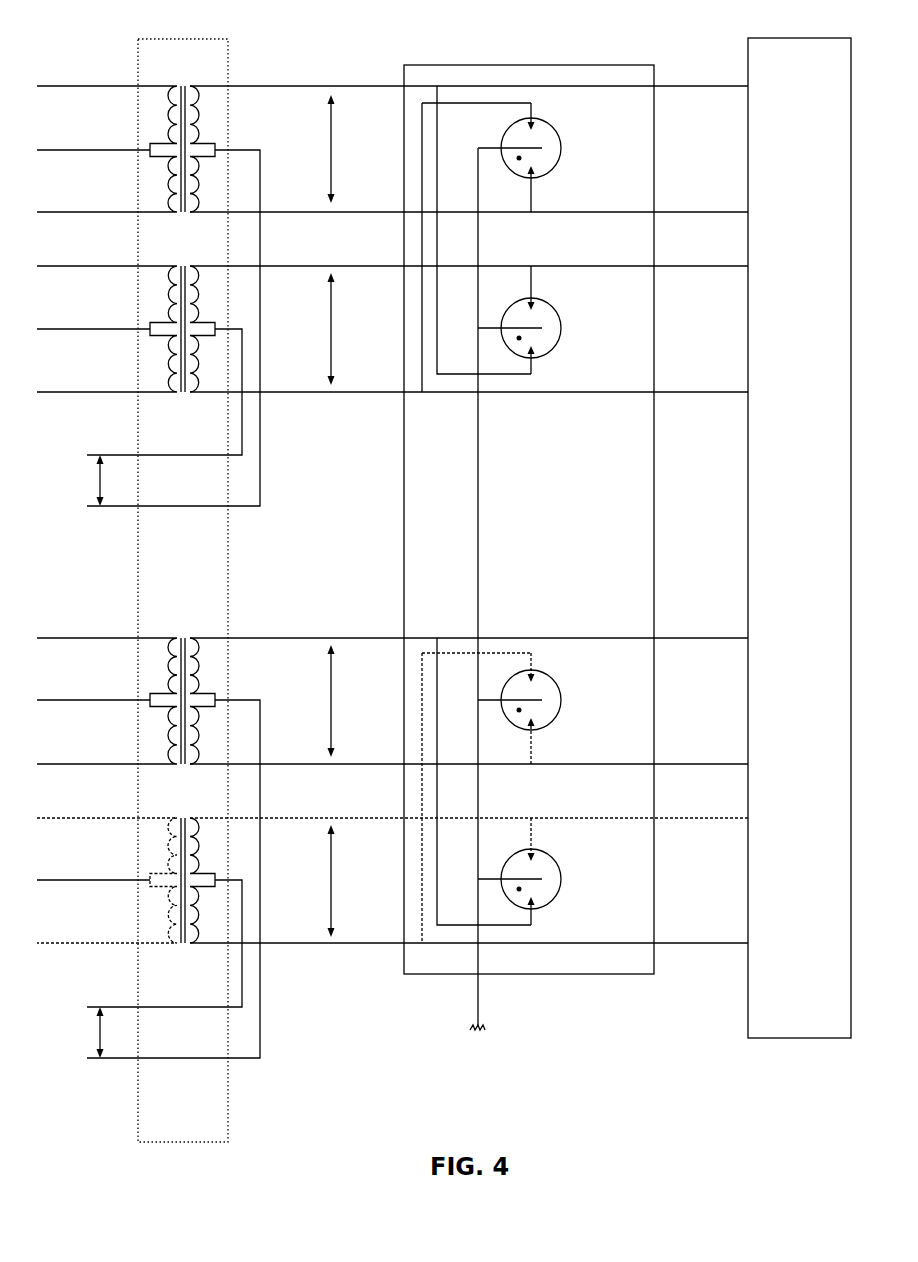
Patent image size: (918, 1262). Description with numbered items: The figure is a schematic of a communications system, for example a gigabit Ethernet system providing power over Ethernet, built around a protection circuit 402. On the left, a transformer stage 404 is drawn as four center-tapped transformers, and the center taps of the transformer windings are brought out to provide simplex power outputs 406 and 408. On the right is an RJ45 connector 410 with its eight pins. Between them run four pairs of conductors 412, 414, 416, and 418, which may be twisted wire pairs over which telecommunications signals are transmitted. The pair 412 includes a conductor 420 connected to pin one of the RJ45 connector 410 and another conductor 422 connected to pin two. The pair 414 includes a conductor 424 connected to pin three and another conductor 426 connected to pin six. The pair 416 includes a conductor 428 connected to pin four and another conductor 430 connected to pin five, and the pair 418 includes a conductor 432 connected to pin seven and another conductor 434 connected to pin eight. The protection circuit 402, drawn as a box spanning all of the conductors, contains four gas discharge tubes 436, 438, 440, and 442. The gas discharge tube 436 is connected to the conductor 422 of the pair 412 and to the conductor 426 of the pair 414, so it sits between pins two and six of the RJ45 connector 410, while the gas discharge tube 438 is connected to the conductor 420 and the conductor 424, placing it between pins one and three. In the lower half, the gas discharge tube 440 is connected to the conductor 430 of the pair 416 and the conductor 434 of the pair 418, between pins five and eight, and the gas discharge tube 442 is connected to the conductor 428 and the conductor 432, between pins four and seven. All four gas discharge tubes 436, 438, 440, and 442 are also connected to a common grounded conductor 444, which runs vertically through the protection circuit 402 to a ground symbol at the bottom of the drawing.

The protection circuit 402 is at (588, 65).
The transformer stage 404 is at (228, 50).
The simplex power output 406 is at (63, 512).
The simplex power output 408 is at (63, 1075).
The RJ45 connector 410 is at (800, 38).
The pair of conductors 412 is at (331, 155).
The pair of conductors 414 is at (331, 335).
The pair of conductors 416 is at (331, 700).
The pair of conductors 418 is at (331, 880).
The conductor 420 is at (665, 86).
The conductor 422 is at (665, 212).
The conductor 424 is at (665, 266).
The conductor 426 is at (665, 392).
The conductor 428 is at (665, 638).
The conductor 430 is at (665, 764).
The conductor 432 is at (665, 818).
The conductor 434 is at (665, 943).
The gas discharge tube 436 is at (556, 134).
The gas discharge tube 438 is at (556, 314).
The gas discharge tube 440 is at (556, 686).
The gas discharge tube 442 is at (556, 865).
The grounded conductor 444 is at (478, 990).